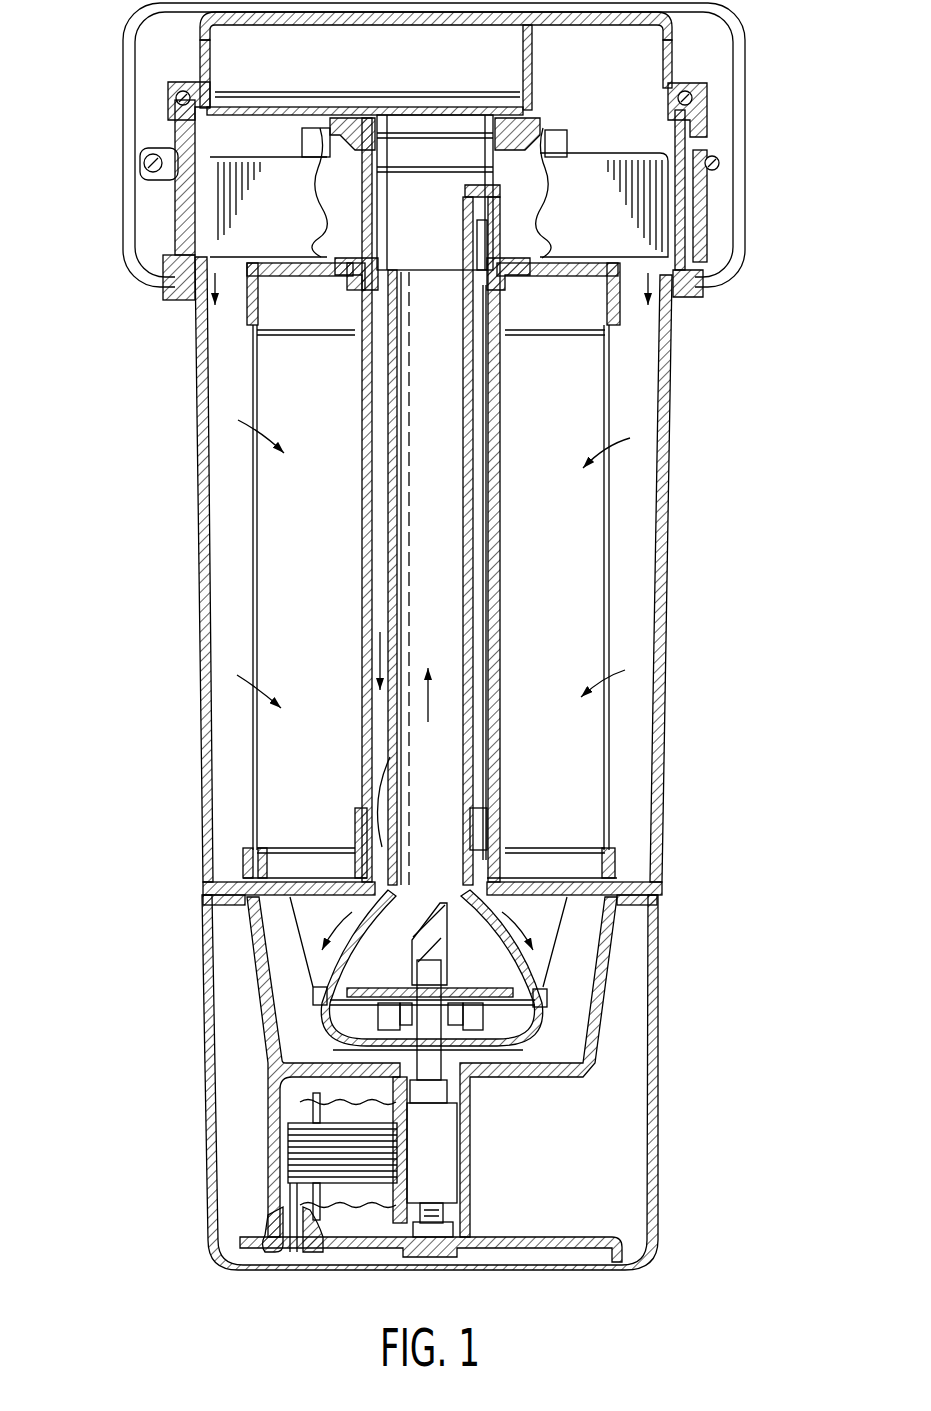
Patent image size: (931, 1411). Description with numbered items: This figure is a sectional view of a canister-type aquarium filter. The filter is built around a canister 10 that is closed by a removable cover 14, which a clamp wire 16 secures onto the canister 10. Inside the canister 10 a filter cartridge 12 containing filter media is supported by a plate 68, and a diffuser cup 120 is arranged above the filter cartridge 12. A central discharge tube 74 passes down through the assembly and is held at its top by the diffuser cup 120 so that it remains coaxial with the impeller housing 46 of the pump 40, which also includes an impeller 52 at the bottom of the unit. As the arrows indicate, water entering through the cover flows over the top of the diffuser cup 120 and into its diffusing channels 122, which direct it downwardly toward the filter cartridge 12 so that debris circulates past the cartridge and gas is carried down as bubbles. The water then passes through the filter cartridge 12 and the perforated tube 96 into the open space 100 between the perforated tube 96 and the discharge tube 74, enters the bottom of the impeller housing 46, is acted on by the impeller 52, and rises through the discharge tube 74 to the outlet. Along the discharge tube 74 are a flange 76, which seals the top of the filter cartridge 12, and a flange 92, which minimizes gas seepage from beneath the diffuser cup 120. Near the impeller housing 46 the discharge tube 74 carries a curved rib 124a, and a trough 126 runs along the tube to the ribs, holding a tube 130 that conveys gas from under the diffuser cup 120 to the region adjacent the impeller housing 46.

The canister 10 is at (667, 484).
The filter cartridge 12 is at (612, 778).
The removable cover 14 is at (673, 50).
The clamp wire 16 is at (747, 88).
The pump 40 is at (568, 1003).
The impeller housing 46 is at (535, 947).
The impeller 52 is at (482, 1020).
The plate 68 is at (317, 905).
The discharge tube 74 is at (398, 736).
The flange 76 is at (530, 232).
The flange 92 is at (548, 166).
The perforated tube 96 is at (375, 655).
The open space 100 is at (377, 602).
The diffuser cup 120 is at (213, 190).
The diffusing channels 122 is at (218, 318).
The curved rib 124a is at (386, 795).
The trough 126 is at (468, 556).
The tube 130 is at (475, 658).